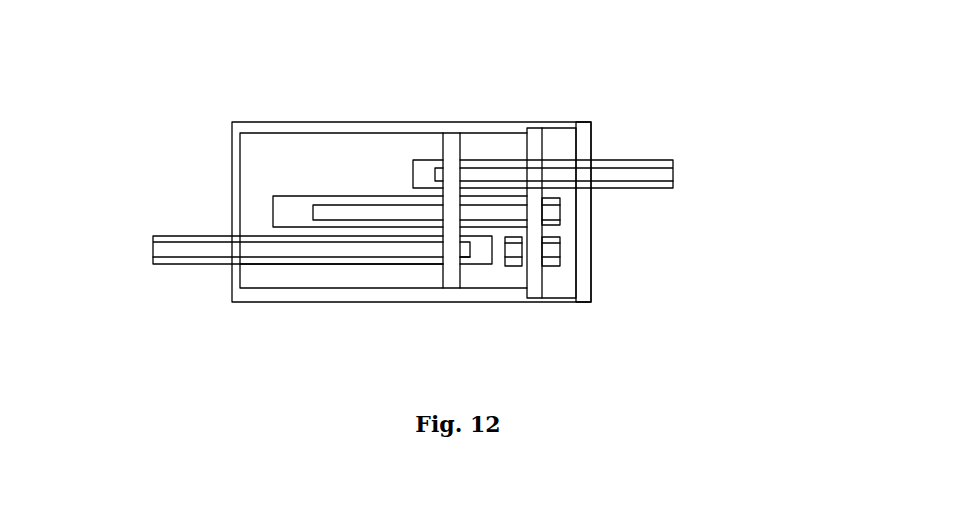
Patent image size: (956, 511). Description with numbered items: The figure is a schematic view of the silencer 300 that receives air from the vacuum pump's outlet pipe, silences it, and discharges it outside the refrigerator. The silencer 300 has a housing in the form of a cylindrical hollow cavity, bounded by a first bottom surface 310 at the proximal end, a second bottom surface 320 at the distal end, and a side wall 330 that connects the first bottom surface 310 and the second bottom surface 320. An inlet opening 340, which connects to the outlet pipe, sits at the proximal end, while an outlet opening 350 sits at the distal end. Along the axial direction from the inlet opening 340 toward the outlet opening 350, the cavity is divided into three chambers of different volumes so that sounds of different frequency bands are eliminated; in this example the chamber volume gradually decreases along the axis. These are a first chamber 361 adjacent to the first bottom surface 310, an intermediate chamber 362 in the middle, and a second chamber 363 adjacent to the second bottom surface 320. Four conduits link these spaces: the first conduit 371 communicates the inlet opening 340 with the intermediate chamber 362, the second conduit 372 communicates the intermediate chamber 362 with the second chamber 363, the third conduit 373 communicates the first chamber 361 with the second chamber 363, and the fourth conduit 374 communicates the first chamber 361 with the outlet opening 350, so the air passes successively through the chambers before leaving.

The silencer 300 is at (721, 57).
The first bottom surface 310 is at (233, 168).
The second bottom surface 320 is at (580, 233).
The side wall 330 is at (367, 131).
The inlet opening 340 is at (158, 234).
The outlet opening 350 is at (672, 160).
The first chamber 361 is at (290, 140).
The intermediate chamber 362 is at (488, 145).
The second chamber 363 is at (560, 137).
The first conduit 371 is at (277, 253).
The second conduit 372 is at (520, 262).
The third conduit 373 is at (360, 222).
The fourth conduit 374 is at (603, 177).